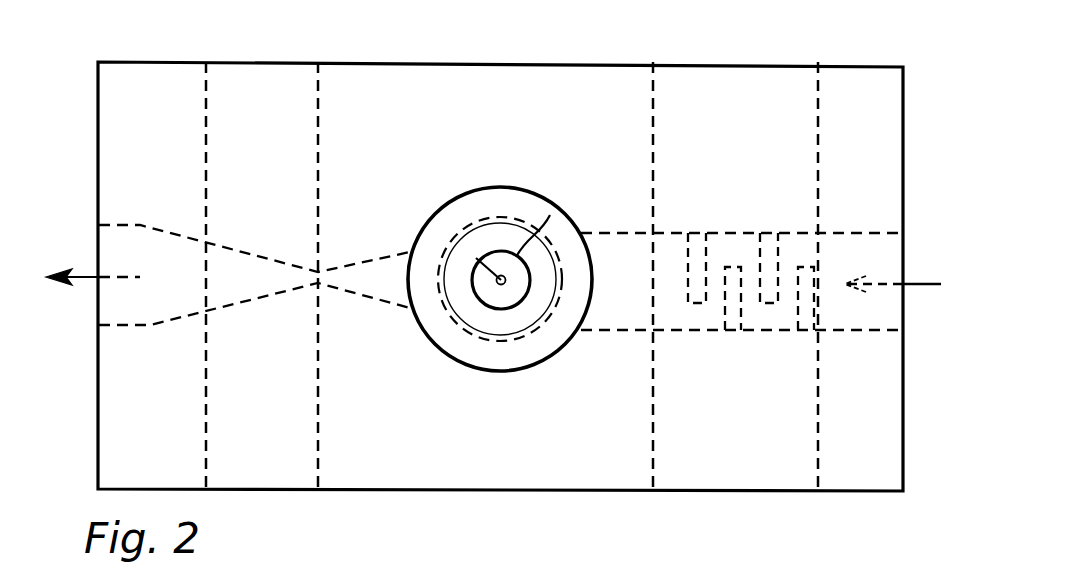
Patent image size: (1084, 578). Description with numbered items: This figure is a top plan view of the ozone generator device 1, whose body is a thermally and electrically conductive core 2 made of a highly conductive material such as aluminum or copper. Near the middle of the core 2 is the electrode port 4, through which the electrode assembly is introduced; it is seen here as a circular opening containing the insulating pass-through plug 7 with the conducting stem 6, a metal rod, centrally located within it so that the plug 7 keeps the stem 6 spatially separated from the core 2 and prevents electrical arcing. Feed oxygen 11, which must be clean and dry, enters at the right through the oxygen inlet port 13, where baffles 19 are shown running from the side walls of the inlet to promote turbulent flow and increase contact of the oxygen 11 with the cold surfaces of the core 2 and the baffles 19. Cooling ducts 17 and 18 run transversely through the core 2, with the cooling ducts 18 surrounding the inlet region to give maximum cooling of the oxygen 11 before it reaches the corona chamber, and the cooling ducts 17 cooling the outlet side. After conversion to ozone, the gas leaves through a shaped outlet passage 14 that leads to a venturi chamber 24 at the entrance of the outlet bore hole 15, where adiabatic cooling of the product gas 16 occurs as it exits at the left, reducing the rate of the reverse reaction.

The ozone generator device 1 is at (780, 52).
The thermally and electrically conductive core 2 is at (494, 128).
The electrode port 4 is at (444, 226).
The conducting stem 6 is at (476, 263).
The insulating pass-through plug 7 is at (550, 215).
The oxygen 11 is at (910, 288).
The oxygen inlet port 13 is at (904, 257).
The shaped outlet passage 14 is at (372, 262).
The outlet bore hole 15 is at (130, 228).
The product gas 16 is at (86, 276).
The cooling ducts 17 is at (284, 137).
The cooling ducts 18 is at (760, 142).
The baffles 19 is at (758, 255).
The venturi chamber 24 is at (266, 272).